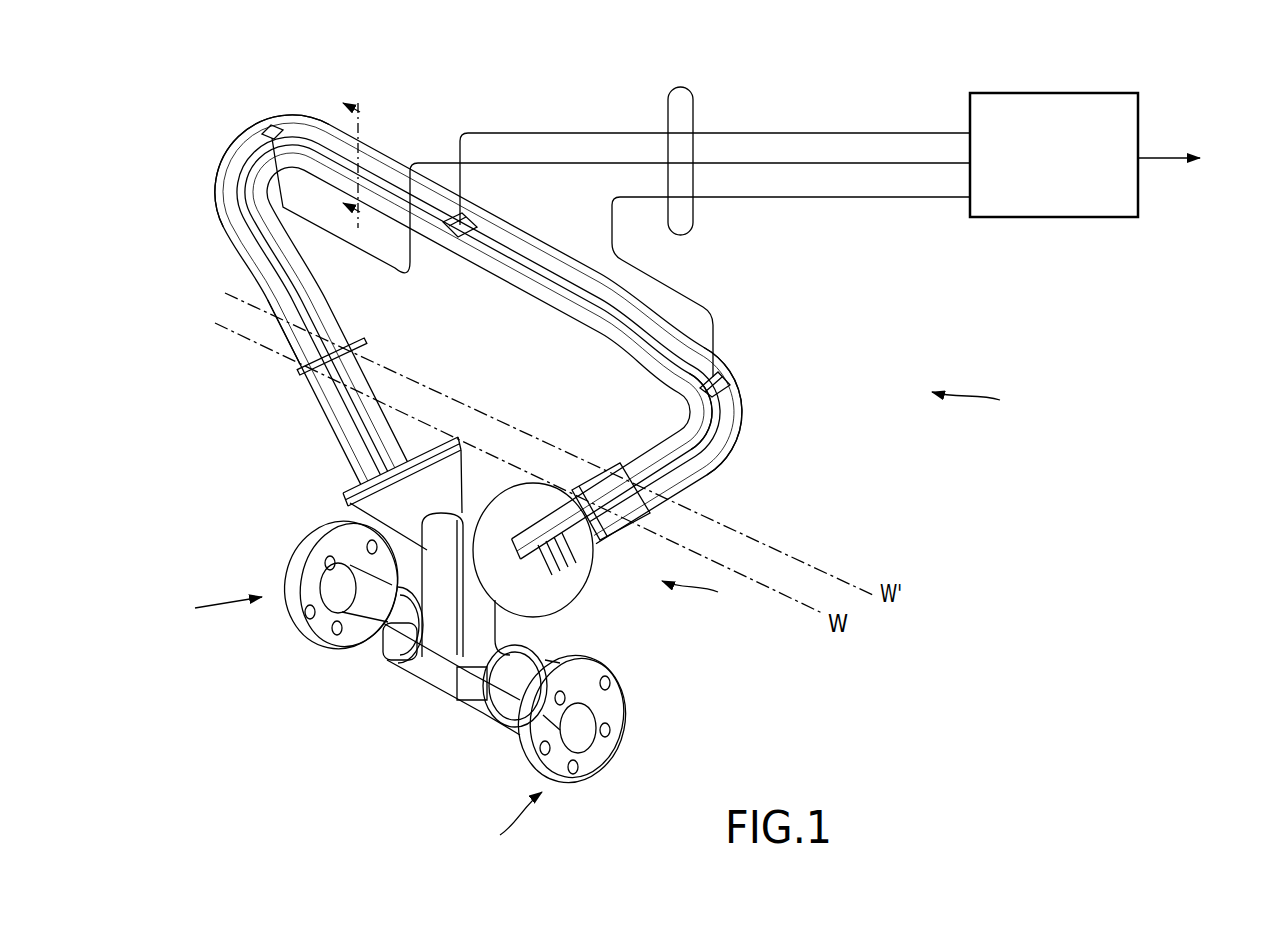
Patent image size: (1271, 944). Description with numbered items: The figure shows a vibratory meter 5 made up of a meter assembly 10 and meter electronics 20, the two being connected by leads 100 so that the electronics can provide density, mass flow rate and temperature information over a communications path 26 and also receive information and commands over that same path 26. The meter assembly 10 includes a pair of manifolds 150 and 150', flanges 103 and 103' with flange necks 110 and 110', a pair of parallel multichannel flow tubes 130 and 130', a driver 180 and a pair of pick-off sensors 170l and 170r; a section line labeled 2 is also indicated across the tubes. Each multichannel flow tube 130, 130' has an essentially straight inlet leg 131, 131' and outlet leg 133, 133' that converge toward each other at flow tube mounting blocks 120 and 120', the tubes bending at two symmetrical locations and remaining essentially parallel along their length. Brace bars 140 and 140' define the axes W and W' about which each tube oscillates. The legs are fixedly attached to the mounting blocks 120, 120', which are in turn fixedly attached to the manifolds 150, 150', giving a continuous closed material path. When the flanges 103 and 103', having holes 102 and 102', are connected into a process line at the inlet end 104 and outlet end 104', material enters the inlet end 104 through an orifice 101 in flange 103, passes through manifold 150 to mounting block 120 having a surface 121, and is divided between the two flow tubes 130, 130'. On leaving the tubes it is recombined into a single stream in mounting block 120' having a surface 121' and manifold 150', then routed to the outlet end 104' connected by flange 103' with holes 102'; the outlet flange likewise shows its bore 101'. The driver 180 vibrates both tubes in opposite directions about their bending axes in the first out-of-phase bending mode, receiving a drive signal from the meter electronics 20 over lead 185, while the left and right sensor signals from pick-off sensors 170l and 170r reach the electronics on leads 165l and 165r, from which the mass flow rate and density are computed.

The vibratory meter 5 is at (971, 404).
The meter assembly 10 is at (702, 594).
The meter electronics 20 is at (1090, 217).
The communications path 26 is at (1162, 160).
The leads 100 is at (668, 97).
The orifice 101 is at (297, 585).
The flange 101' is at (580, 718).
The holes 102 is at (308, 616).
The holes 102' is at (616, 714).
The flange 103 is at (342, 567).
The flange 103' is at (577, 737).
The inlet end 104 is at (211, 609).
The outlet end 104' is at (503, 826).
The flange neck 110 is at (337, 625).
The flange neck 110' is at (511, 709).
The flow tube mounting block 120 is at (379, 471).
The flow tube mounting block 120' is at (562, 550).
The surface 121 is at (416, 460).
The surface 121' is at (544, 490).
The multichannel flow tube 130 is at (478, 352).
The multichannel flow tube 130' is at (478, 329).
The inlet leg 131 is at (252, 171).
The inlet leg 131' is at (334, 323).
The outlet leg 133 is at (675, 411).
The outlet leg 133' is at (758, 411).
The brace bar 140 is at (303, 367).
The brace bar 140' is at (611, 523).
The manifold 150 is at (451, 631).
The manifold 150' is at (541, 627).
The lead 165l is at (957, 164).
The lead 165r is at (885, 200).
The pick-off sensor 170l is at (268, 128).
The pick-off sensor 170r is at (735, 378).
The driver 180 is at (476, 222).
The lead 185 is at (722, 133).
The section line 2 is at (353, 164).